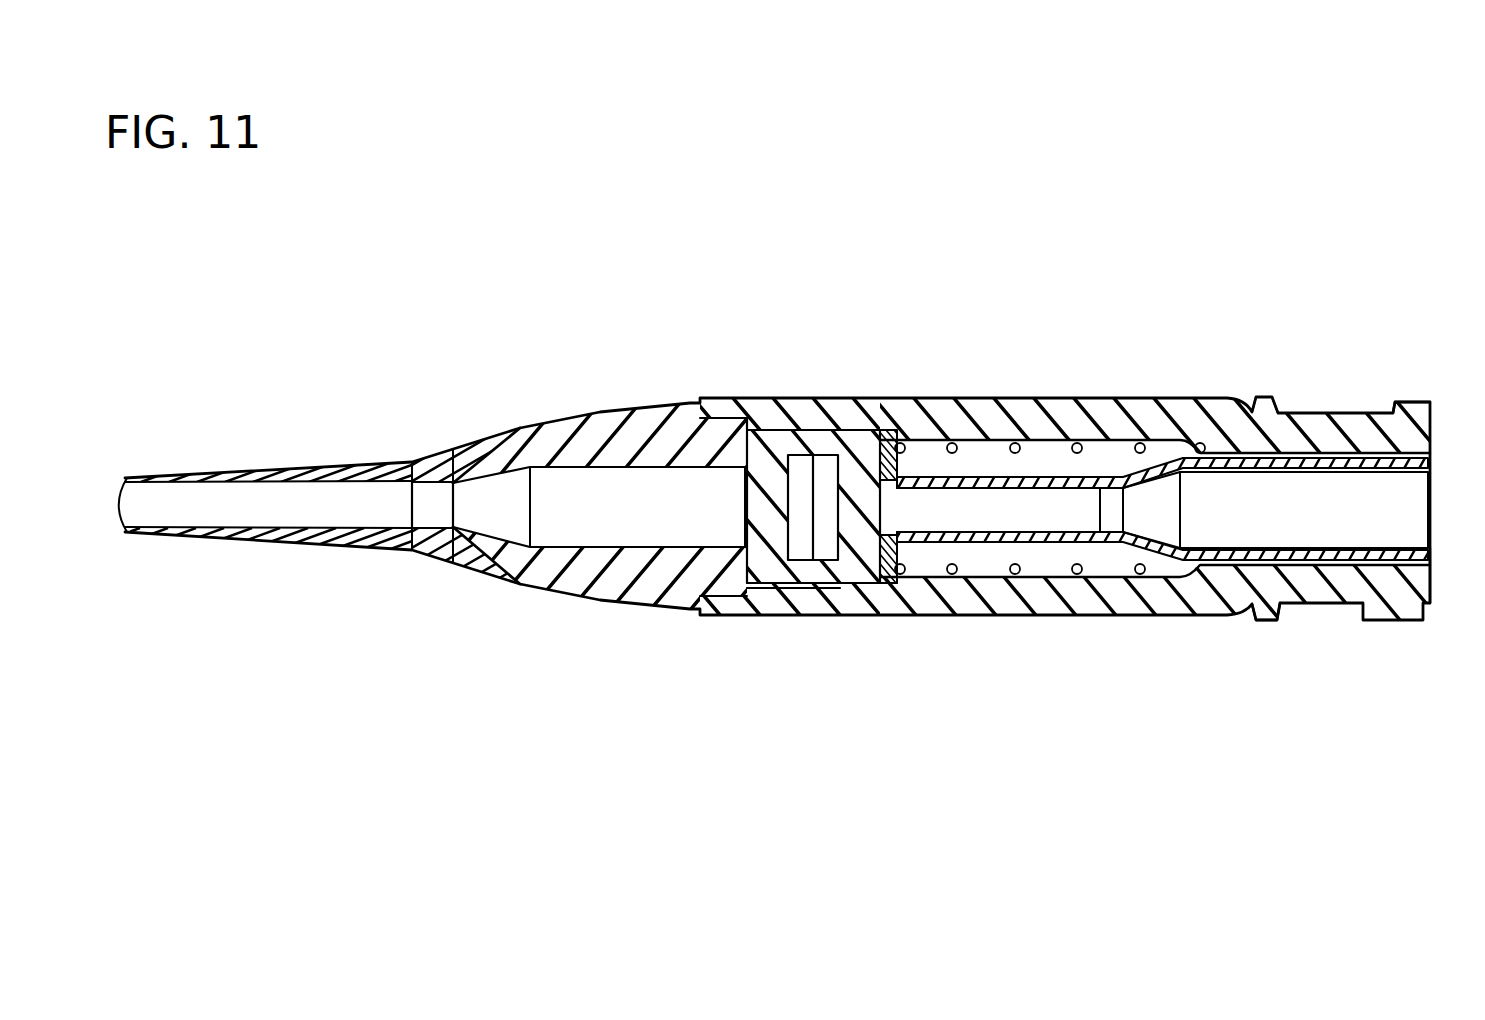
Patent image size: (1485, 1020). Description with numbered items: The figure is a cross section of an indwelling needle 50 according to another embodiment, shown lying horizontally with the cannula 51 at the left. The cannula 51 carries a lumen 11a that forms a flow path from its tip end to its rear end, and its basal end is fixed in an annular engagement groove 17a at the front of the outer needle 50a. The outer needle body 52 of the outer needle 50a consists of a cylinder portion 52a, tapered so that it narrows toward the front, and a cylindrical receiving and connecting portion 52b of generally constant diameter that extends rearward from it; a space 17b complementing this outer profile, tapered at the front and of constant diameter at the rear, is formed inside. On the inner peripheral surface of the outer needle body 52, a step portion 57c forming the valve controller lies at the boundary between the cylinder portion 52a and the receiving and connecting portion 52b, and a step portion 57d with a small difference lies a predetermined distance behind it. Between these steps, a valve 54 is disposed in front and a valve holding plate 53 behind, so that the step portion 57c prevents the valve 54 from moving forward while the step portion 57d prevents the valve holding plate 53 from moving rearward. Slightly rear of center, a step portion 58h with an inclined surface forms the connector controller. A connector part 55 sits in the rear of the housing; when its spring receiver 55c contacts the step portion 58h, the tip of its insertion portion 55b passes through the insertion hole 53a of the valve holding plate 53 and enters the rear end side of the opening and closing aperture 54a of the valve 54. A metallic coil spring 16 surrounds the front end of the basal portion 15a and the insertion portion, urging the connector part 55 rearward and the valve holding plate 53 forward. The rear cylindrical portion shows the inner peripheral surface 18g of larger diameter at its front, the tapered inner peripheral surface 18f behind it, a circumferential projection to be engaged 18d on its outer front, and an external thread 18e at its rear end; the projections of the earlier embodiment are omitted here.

The indwelling needle 50 is at (1343, 266).
The outer needle 50a is at (325, 283).
The cannula 51 is at (349, 462).
The outer needle body 52 is at (510, 333).
The cylinder portion 52a is at (557, 432).
The cylindrical receiving and connecting portion 52b is at (776, 398).
The lumen 11a is at (219, 520).
The annular engagement groove 17a is at (437, 558).
The space 17b is at (662, 470).
The valve holding plate 53 is at (884, 399).
The insertion hole 53a is at (897, 537).
The valve 54 is at (817, 582).
The opening and closing aperture 54a is at (745, 525).
The step portion 57c is at (766, 587).
The step portion 57d is at (888, 584).
The coil spring 16 is at (1064, 596).
The inner peripheral surface 18g is at (985, 584).
The connector part 55 is at (1073, 700).
The insertion portion 55b is at (1103, 600).
The spring receiver 55c is at (1197, 600).
The basal portion 15a is at (1250, 606).
The step portion 58h is at (1185, 472).
The projection to be engaged 18d is at (1270, 614).
The external thread 18e is at (1409, 412).
The inner peripheral surface 18f is at (1432, 568).